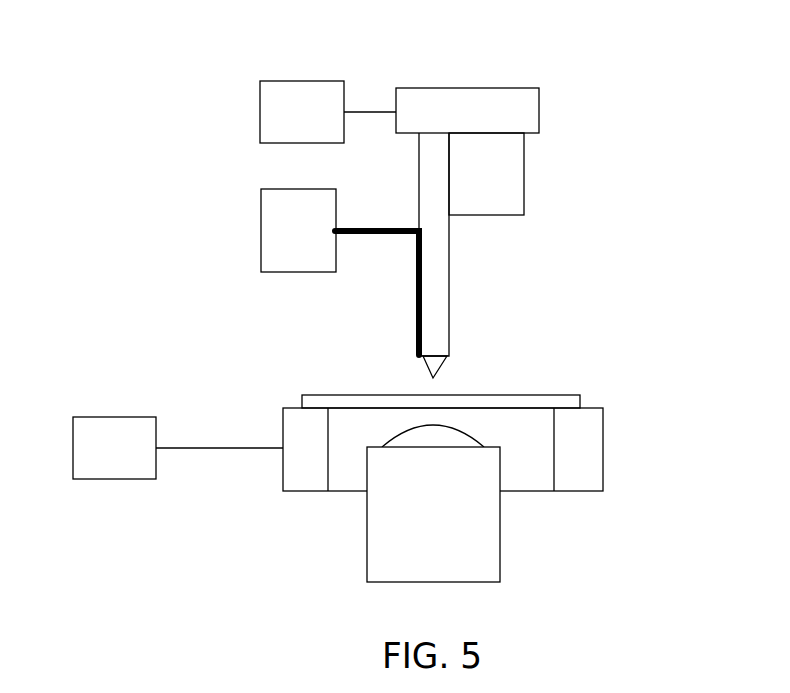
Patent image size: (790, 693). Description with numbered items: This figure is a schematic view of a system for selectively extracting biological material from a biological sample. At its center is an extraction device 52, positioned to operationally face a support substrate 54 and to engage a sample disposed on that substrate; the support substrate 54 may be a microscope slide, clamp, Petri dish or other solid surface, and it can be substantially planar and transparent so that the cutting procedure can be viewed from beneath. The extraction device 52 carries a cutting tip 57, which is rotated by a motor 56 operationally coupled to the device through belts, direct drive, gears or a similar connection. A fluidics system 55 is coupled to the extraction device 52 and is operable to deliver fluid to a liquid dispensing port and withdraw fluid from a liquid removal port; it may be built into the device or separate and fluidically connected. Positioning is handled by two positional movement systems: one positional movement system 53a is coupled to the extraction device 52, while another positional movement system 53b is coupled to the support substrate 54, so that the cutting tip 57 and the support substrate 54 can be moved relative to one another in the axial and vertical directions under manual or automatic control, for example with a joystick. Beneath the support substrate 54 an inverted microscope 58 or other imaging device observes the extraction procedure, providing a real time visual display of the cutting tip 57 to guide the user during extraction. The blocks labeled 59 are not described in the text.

The extraction device 52 is at (449, 283).
The positional movement system coupled to the extraction device 53a is at (539, 116).
The positional movement system coupled to the support substrate 53b is at (603, 448).
The support substrate 54 is at (565, 395).
The fluidics system 55 is at (261, 230).
The motor 56 is at (524, 198).
The cutting tip 57 is at (437, 368).
The inverted microscope 58 is at (500, 567).
The controller 59 is at (300, 81).